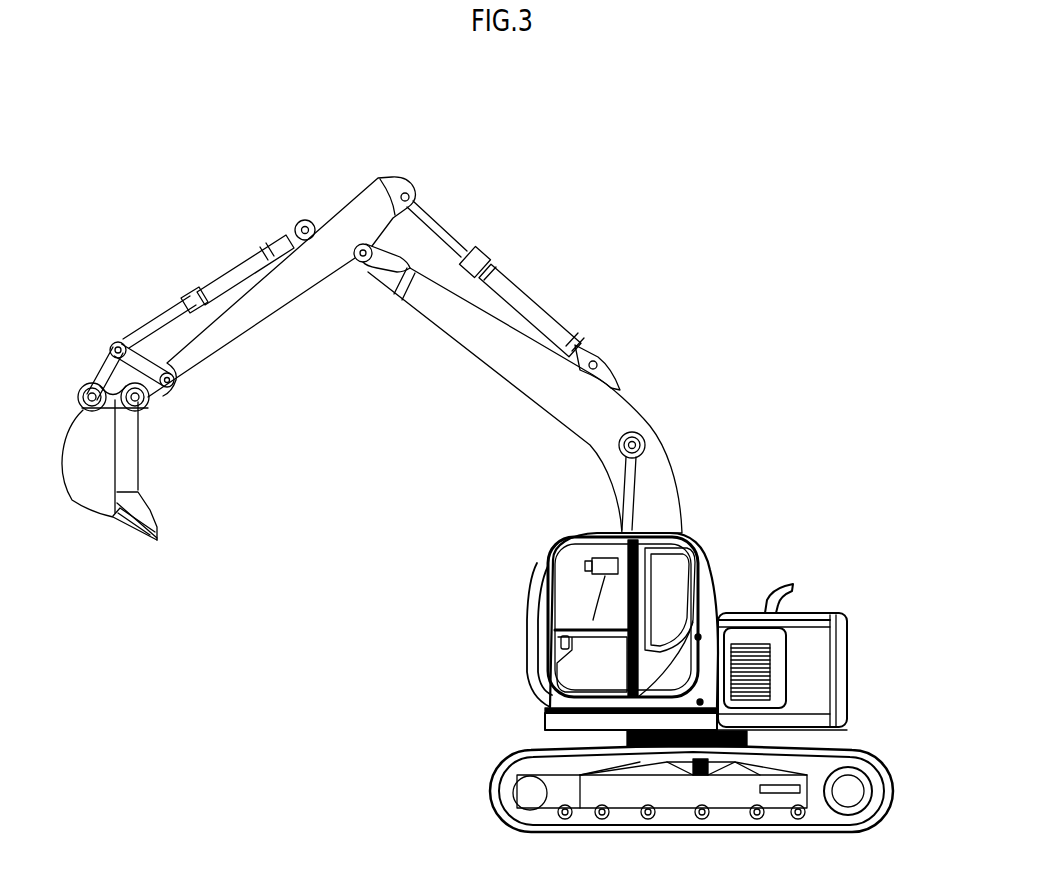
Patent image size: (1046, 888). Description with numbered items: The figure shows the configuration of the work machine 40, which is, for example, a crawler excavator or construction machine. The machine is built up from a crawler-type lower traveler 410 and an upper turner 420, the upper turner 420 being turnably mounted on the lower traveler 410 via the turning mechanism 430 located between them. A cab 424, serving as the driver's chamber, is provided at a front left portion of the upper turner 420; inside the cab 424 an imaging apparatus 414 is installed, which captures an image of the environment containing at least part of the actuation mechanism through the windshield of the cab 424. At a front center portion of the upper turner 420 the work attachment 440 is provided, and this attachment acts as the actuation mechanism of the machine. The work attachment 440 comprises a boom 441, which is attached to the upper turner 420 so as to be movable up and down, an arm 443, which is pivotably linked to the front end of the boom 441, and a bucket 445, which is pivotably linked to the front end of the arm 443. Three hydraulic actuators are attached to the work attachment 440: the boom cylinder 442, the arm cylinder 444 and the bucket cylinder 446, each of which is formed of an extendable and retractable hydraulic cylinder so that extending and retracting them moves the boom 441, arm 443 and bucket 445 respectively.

The work machine 40 is at (720, 142).
The lower traveler 410 is at (511, 754).
The imaging apparatus 414 is at (601, 560).
The upper turner 420 is at (872, 641).
The cab 424 is at (726, 514).
The turning mechanism 430 is at (785, 741).
The work attachment 440 is at (514, 206).
The boom 441 is at (672, 466).
The boom cylinder 442 is at (624, 512).
The arm 443 is at (264, 320).
The arm cylinder 444 is at (533, 295).
The bucket 445 is at (93, 498).
The bucket cylinder 446 is at (254, 257).